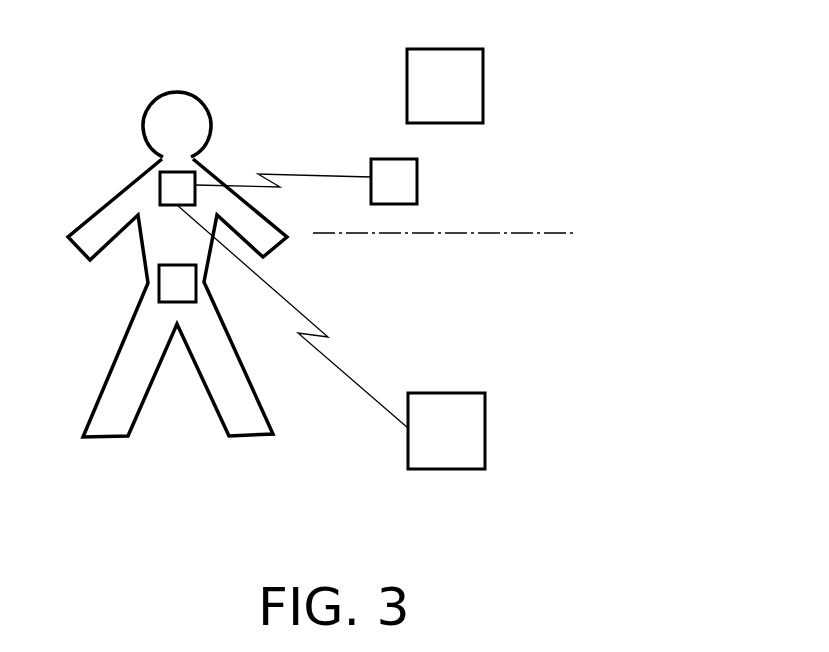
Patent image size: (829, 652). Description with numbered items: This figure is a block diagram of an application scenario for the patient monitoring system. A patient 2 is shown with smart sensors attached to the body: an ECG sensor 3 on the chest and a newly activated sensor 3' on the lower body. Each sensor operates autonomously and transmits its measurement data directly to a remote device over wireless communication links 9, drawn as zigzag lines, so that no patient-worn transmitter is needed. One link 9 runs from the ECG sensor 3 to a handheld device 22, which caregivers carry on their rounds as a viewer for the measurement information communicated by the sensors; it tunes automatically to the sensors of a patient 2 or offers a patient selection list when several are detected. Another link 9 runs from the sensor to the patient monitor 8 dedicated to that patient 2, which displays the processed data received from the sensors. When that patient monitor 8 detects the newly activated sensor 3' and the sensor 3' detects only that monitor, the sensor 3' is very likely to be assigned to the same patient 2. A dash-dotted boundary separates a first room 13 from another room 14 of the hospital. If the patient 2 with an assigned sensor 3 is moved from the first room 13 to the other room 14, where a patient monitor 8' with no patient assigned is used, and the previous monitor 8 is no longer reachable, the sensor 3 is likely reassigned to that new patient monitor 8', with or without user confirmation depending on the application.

The patient 2 is at (107, 217).
The ECG sensor 3 is at (144, 171).
The newly activated sensor 3' is at (150, 285).
The wireless communication links 9 is at (308, 175).
The handheld device 22 is at (417, 182).
The patient monitor 8' is at (469, 86).
The patient monitor 8 is at (465, 431).
The another room 14 is at (527, 178).
The first room 13 is at (528, 298).